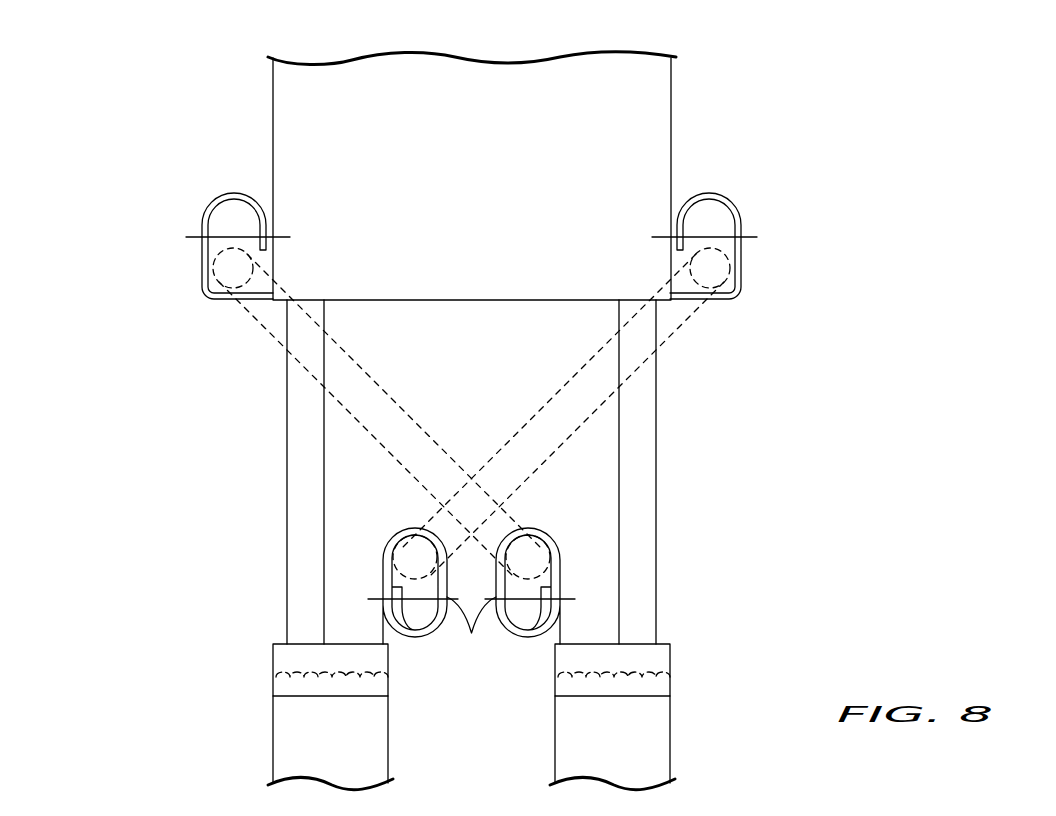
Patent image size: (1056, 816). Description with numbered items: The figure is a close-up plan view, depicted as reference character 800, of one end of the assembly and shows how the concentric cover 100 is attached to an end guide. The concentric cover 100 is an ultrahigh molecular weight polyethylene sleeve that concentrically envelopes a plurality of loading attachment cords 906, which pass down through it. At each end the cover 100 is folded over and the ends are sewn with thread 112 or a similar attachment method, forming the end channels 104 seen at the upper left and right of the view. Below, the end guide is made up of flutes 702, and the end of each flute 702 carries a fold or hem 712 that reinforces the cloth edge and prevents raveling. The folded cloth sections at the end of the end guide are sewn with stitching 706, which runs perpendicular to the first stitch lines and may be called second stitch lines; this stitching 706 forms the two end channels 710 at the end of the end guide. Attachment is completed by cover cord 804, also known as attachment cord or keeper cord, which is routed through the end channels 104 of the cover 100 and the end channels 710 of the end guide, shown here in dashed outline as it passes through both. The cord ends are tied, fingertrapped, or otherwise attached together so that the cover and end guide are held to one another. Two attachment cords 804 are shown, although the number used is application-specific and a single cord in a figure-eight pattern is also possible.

The concentric cover 100 is at (670, 108).
The end channel 104 is at (224, 196).
The thread 112 is at (190, 238).
The flute 702 is at (290, 721).
The stitching 706 is at (472, 633).
The end channel 710 is at (393, 536).
The fold 712 is at (290, 659).
The close-up view of one end 800 is at (740, 555).
The cover cord 804 is at (376, 440).
The loading attachment cords 906 is at (291, 482).